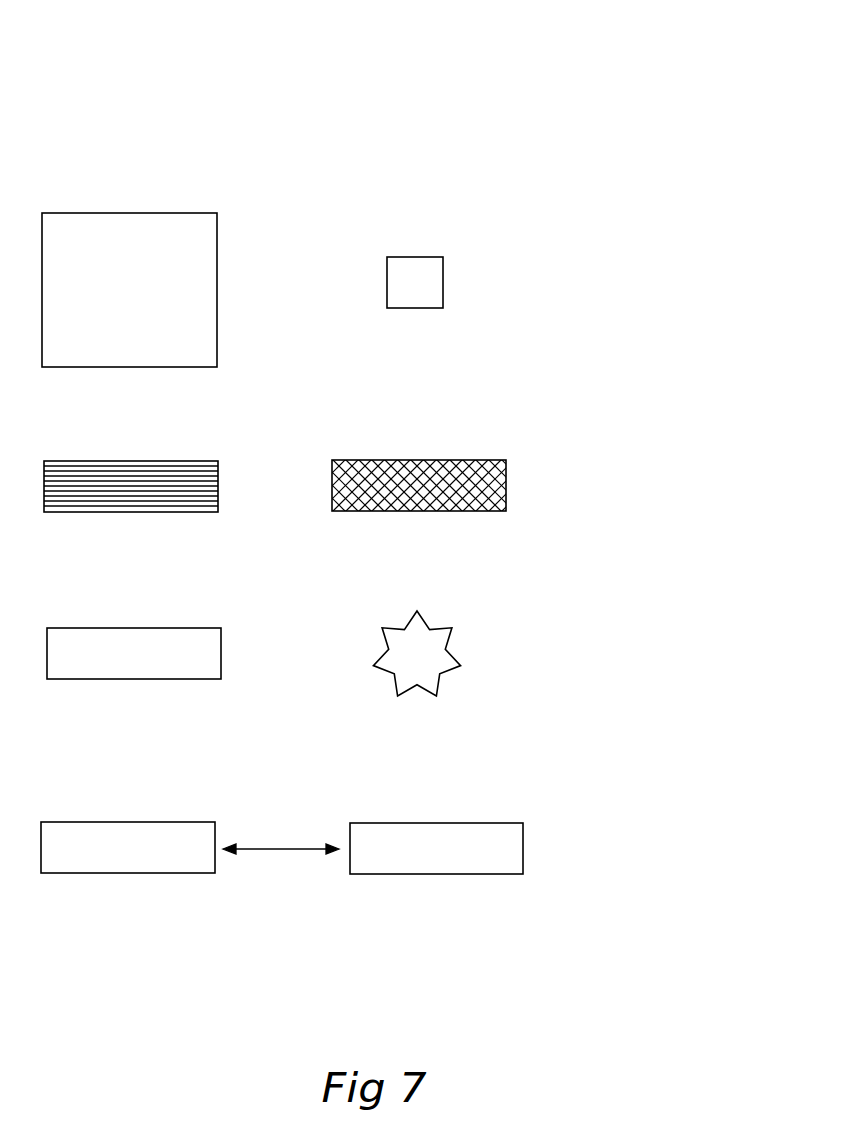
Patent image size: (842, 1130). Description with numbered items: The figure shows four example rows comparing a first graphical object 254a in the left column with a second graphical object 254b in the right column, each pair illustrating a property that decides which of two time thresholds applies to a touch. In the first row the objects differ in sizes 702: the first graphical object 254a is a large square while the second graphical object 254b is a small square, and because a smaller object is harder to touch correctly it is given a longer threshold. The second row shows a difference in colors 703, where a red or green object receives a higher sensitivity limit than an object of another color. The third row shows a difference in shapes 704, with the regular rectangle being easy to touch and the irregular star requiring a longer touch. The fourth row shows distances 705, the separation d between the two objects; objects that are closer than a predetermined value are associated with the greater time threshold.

The first graphical object 254a is at (118, 24).
The second graphical object 254b is at (394, 24).
The sizes 702 is at (542, 294).
The colors 703 is at (560, 495).
The shapes 704 is at (544, 656).
The distances 705 is at (554, 845).